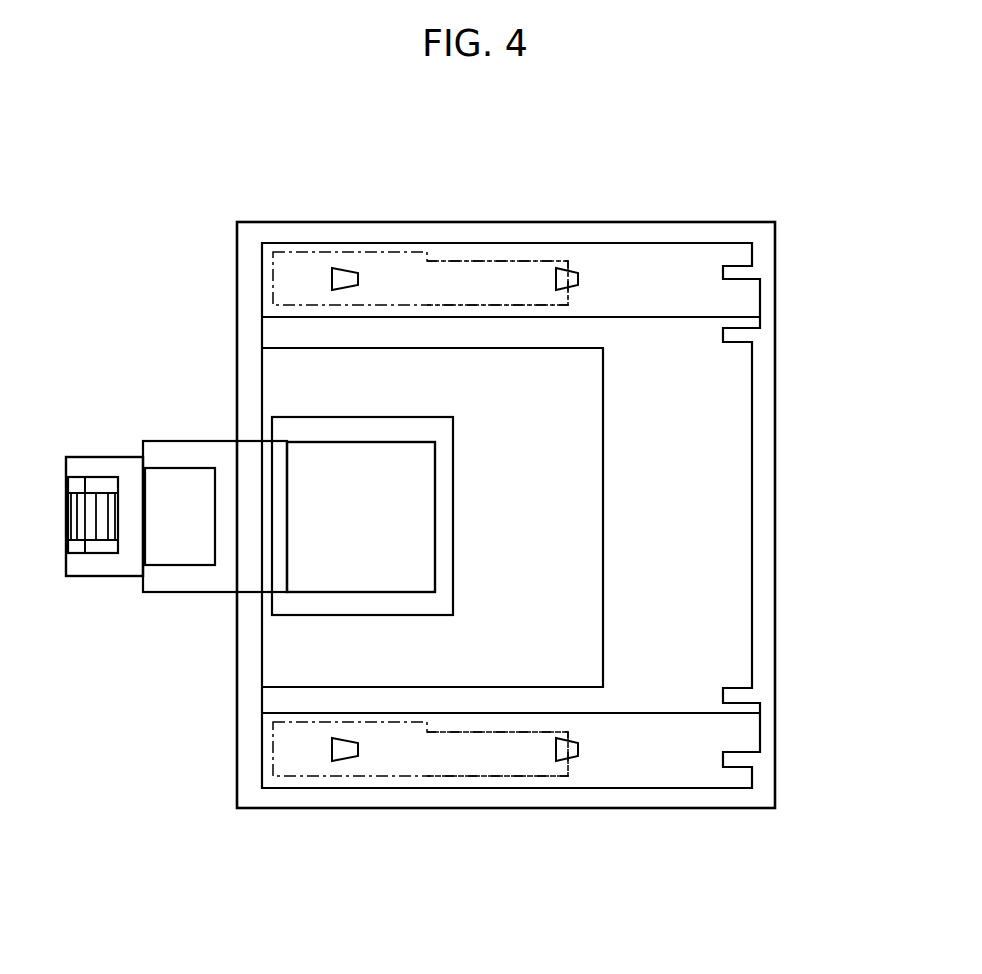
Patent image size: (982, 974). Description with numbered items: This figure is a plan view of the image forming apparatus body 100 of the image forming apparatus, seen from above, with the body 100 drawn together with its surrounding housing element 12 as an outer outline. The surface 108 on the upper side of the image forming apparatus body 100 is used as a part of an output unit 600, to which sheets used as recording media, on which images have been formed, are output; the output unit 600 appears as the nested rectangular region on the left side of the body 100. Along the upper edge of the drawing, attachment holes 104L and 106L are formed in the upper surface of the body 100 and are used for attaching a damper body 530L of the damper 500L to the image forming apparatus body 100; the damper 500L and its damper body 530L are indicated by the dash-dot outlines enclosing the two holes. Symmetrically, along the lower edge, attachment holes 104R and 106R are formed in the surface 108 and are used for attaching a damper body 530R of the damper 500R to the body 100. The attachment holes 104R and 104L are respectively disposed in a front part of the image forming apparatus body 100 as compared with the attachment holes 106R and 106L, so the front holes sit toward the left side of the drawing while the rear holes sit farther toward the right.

The image forming apparatus body 100 is at (699, 203).
The housing 12 is at (779, 231).
The surface 108 is at (272, 390).
The output unit 600 is at (318, 622).
The damper 500L is at (315, 243).
The damper body 530L is at (458, 261).
The attachment hole 104L is at (359, 279).
The attachment hole 106L is at (579, 279).
The damper 500R is at (343, 786).
The damper body 530R is at (495, 778).
The attachment hole 104R is at (359, 750).
The attachment hole 106R is at (579, 750).